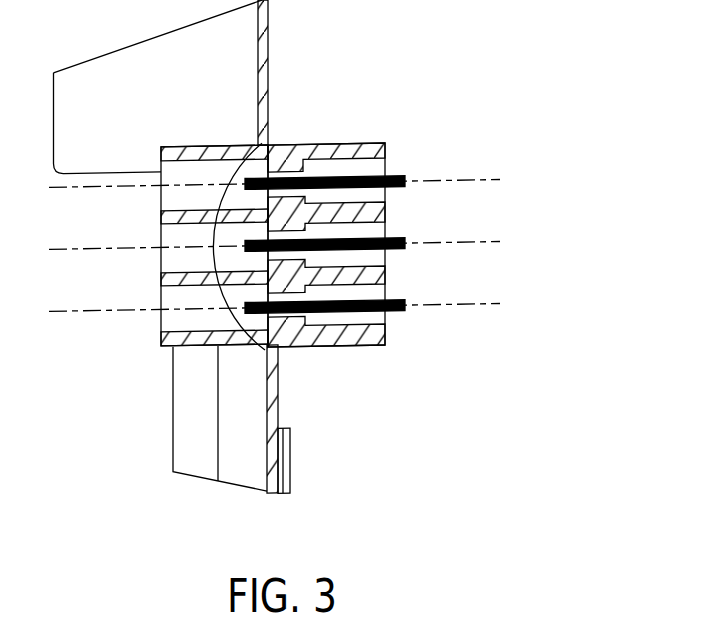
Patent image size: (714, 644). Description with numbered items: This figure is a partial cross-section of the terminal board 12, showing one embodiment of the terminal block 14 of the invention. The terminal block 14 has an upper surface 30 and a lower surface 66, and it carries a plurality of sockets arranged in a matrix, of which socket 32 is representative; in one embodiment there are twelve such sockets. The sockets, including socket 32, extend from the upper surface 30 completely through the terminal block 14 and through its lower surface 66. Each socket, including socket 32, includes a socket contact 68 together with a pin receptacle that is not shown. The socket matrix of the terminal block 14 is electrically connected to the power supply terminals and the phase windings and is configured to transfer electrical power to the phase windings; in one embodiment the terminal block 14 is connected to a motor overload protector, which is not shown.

The terminal board 12 is at (308, 406).
The terminal block 14 is at (273, 208).
The upper surface 30 is at (158, 151).
The socket 32 is at (170, 322).
The lower surface 66 is at (386, 152).
The socket contact 68 is at (405, 184).